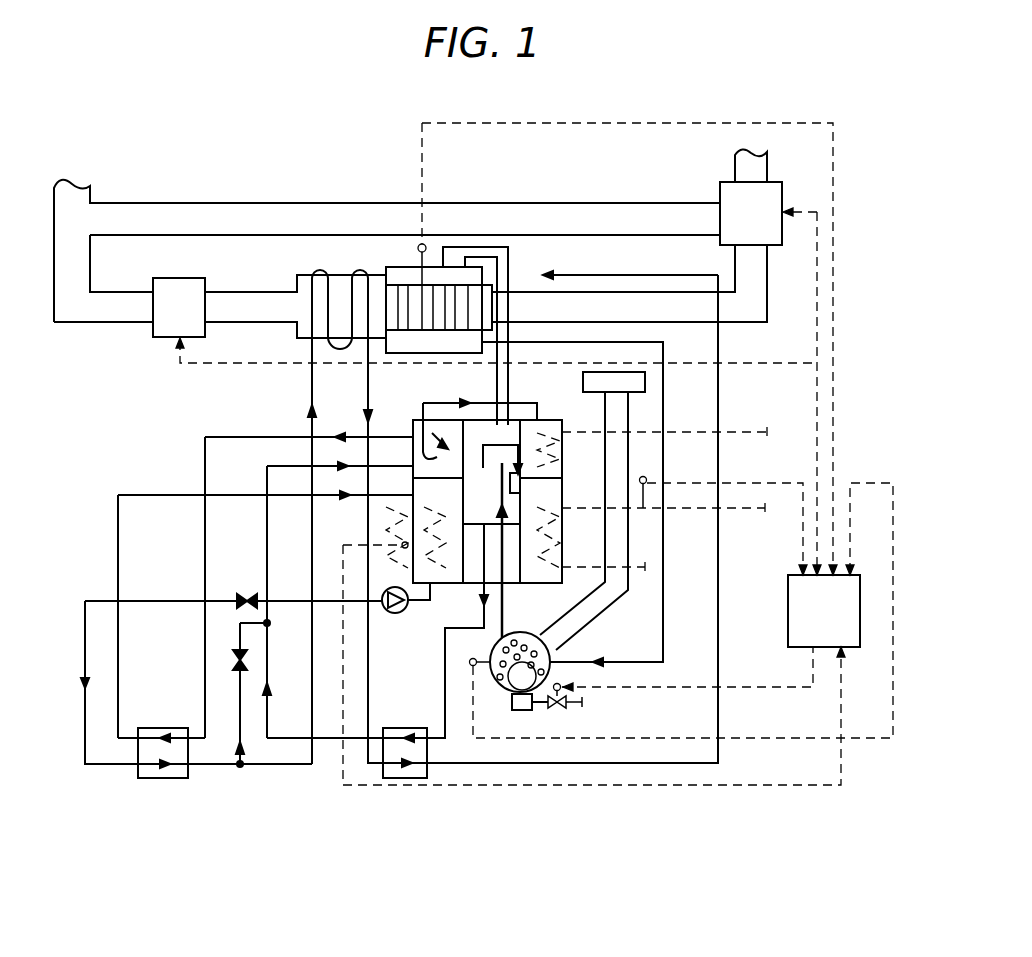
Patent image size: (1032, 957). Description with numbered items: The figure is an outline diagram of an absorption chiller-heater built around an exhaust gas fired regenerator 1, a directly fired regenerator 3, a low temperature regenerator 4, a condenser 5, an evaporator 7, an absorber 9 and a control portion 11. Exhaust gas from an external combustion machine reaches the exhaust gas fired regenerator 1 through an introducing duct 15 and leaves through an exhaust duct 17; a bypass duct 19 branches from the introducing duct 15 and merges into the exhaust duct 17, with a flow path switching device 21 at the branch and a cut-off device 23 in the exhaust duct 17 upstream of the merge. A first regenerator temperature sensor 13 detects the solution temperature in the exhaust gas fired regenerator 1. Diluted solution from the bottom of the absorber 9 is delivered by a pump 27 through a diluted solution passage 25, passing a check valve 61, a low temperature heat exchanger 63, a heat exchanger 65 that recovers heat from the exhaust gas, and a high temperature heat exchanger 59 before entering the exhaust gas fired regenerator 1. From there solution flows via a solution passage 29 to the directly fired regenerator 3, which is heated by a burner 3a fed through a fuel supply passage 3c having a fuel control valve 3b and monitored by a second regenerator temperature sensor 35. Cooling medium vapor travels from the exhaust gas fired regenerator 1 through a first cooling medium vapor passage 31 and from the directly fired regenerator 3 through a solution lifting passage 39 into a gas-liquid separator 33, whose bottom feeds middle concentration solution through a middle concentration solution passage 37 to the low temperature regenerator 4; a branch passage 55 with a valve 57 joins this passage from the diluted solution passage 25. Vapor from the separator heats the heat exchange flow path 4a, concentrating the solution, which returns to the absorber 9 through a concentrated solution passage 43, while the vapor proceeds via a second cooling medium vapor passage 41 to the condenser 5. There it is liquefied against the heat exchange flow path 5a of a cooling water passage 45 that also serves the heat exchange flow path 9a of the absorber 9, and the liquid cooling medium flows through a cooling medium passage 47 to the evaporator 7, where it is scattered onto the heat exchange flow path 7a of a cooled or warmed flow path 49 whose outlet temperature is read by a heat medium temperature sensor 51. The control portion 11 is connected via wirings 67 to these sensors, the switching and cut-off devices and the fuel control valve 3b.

The exhaust gas fired regenerator 1 is at (398, 272).
The directly fired regenerator 3 is at (562, 656).
The burner 3a is at (532, 712).
The fuel control valve 3b is at (566, 708).
The fuel supply passage 3c is at (585, 706).
The low temperature regenerator 4 is at (413, 425).
The heat exchange flow path 4a is at (413, 457).
The condenser 5 is at (548, 420).
The heat exchange flow path 5a is at (565, 443).
The evaporator 7 is at (562, 578).
The heat exchange flow path 7a is at (565, 528).
The absorber 9 is at (450, 585).
The heat exchange flow path 9a is at (442, 527).
The control portion 11 is at (788, 615).
The first regenerator temperature sensor 13 is at (428, 246).
The introducing duct 15 is at (767, 302).
The exhaust duct 17 is at (256, 292).
The bypass duct 19 is at (583, 212).
The flow path switching device 21 is at (726, 182).
The cut-off device 23 is at (165, 340).
The diluted solution passage 25 is at (593, 770).
The pump 27 is at (397, 615).
The solution passage 29 is at (668, 585).
The first cooling medium vapor passage 31 is at (510, 254).
The gas-liquid separator 33 is at (514, 425).
The second regenerator temperature sensor 35 is at (473, 668).
The middle concentration solution passage 37 is at (446, 745).
The solution lifting passage 39 is at (505, 608).
The second cooling medium vapor passage 41 is at (460, 402).
The concentrated solution passage 43 is at (250, 437).
The cooling water passage 45 is at (738, 430).
The cooling medium passage 47 is at (505, 460).
The cooled or warmed flow path 49 is at (743, 512).
The heat medium temperature sensor 51 is at (650, 482).
The branch passage 55 is at (240, 735).
The valve 57 is at (238, 664).
The high temperature heat exchanger 59 is at (405, 778).
The check valve 61 is at (247, 596).
The low temperature heat exchanger 63 is at (165, 778).
The heat exchanger 65 is at (340, 285).
The wirings 67 is at (850, 483).